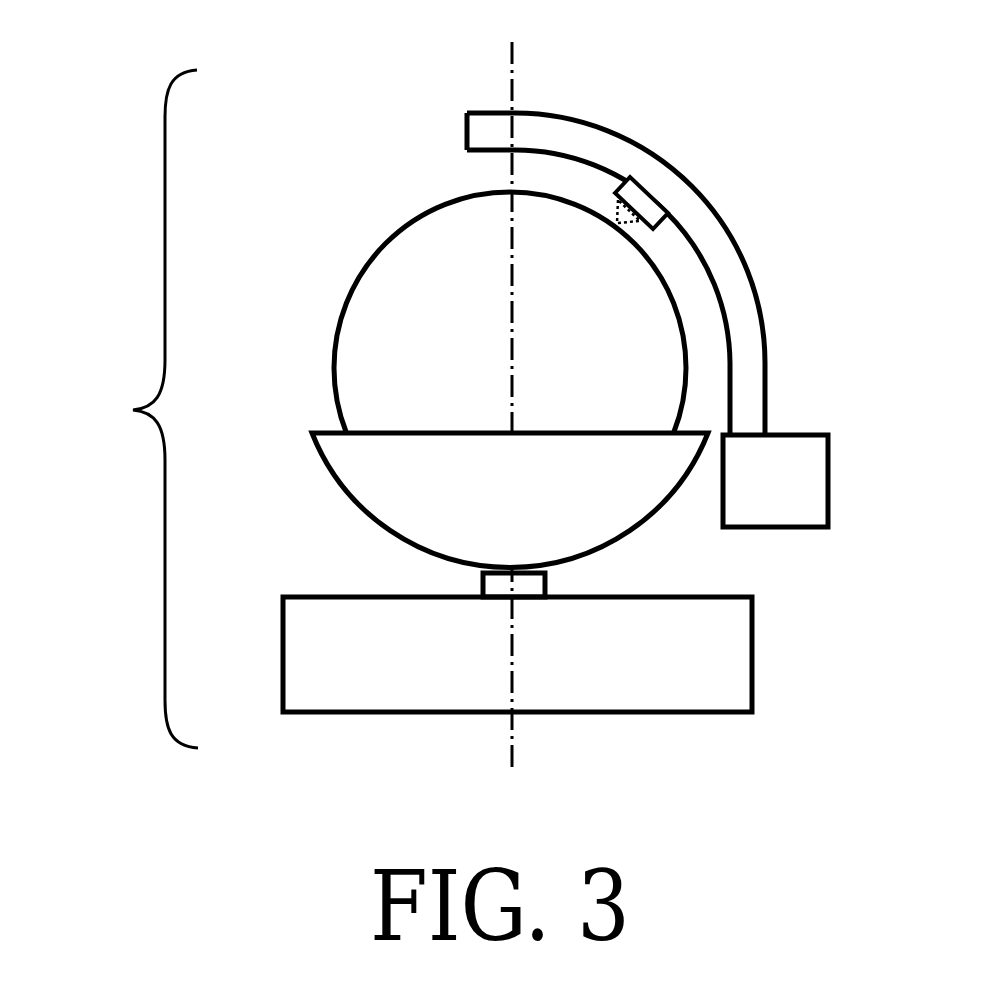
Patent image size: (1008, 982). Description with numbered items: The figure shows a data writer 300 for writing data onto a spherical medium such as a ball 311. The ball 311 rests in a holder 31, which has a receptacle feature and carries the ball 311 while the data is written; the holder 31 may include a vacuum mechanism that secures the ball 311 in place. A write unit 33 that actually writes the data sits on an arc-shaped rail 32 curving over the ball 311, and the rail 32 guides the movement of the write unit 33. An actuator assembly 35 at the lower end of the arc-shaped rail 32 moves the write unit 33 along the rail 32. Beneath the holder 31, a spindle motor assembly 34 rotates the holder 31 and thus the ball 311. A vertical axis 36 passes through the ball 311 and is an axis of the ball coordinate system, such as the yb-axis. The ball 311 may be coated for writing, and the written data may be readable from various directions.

The data writer 300 is at (123, 409).
The holder 31 is at (340, 465).
The ball 311 is at (375, 302).
The arc-shaped rail 32 is at (718, 250).
The write unit 33 is at (640, 205).
The spindle motor assembly 34 is at (300, 650).
The actuator assembly 35 is at (800, 478).
The axis 36 is at (515, 98).